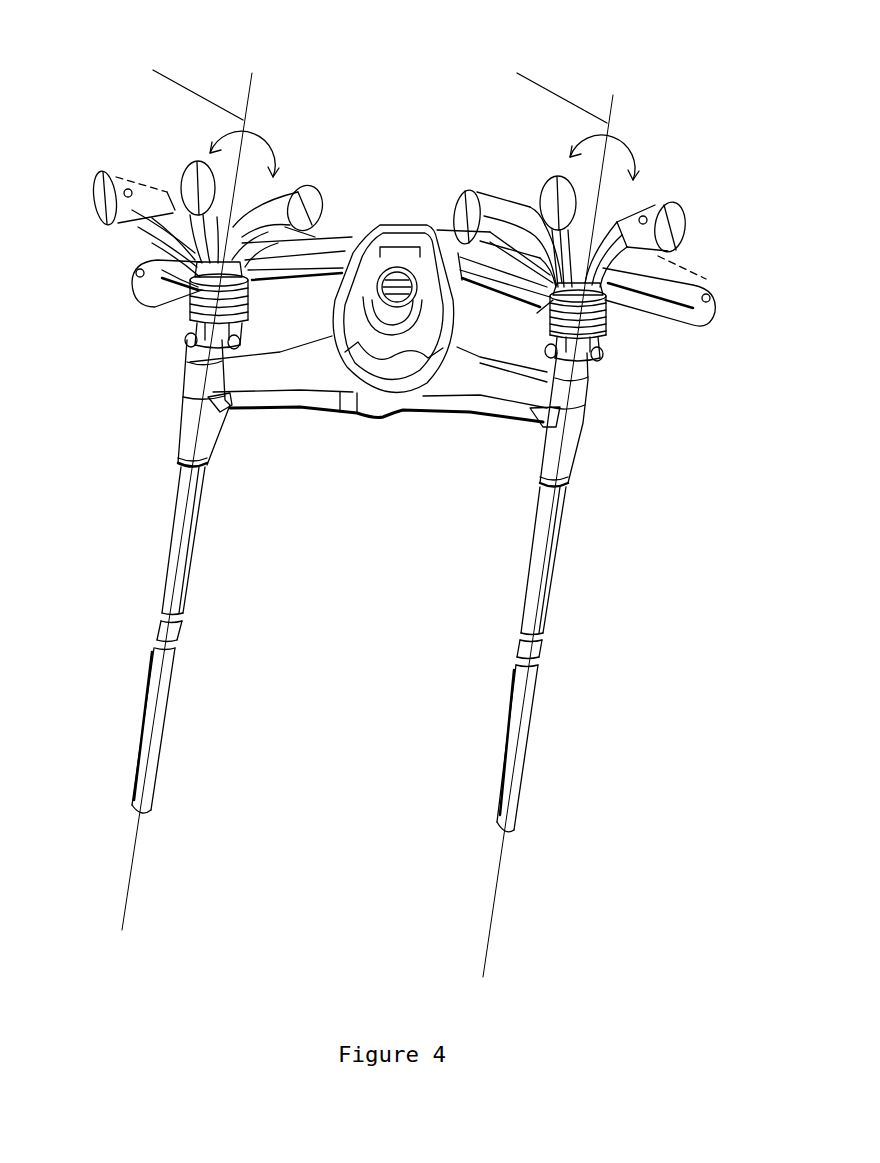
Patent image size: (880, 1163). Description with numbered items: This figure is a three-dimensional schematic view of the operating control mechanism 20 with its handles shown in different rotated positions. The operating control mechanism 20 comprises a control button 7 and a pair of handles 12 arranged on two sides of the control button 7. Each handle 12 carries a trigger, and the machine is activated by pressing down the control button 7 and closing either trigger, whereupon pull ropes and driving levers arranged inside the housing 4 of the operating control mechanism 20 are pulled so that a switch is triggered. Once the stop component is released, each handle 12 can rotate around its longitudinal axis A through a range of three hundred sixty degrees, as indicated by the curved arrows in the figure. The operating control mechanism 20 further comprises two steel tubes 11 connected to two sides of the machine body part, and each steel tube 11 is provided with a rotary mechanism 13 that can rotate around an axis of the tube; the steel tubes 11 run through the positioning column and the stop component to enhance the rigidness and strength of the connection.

The housing 4 is at (220, 373).
The control button 7 is at (397, 283).
The steel tube 11 is at (170, 590).
The handle 12 is at (449, 222).
The rotary mechanism 13 is at (187, 448).
The operating control mechanism 20 is at (584, 474).